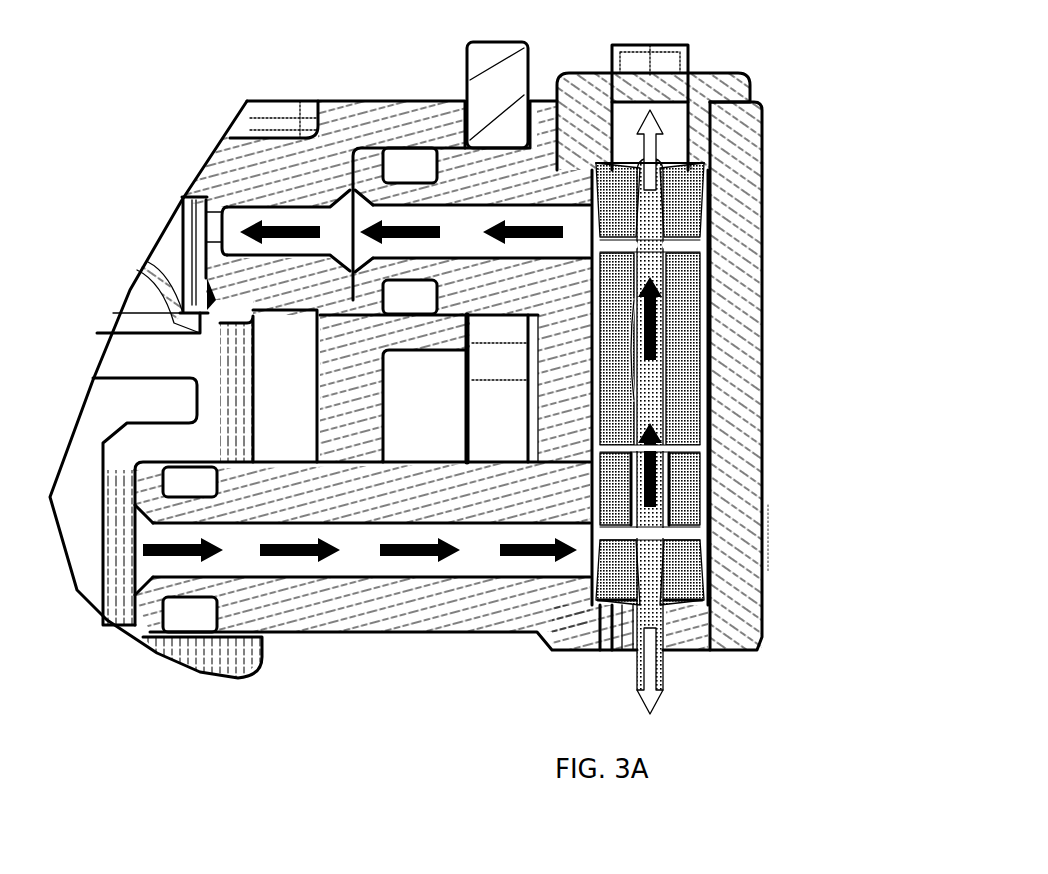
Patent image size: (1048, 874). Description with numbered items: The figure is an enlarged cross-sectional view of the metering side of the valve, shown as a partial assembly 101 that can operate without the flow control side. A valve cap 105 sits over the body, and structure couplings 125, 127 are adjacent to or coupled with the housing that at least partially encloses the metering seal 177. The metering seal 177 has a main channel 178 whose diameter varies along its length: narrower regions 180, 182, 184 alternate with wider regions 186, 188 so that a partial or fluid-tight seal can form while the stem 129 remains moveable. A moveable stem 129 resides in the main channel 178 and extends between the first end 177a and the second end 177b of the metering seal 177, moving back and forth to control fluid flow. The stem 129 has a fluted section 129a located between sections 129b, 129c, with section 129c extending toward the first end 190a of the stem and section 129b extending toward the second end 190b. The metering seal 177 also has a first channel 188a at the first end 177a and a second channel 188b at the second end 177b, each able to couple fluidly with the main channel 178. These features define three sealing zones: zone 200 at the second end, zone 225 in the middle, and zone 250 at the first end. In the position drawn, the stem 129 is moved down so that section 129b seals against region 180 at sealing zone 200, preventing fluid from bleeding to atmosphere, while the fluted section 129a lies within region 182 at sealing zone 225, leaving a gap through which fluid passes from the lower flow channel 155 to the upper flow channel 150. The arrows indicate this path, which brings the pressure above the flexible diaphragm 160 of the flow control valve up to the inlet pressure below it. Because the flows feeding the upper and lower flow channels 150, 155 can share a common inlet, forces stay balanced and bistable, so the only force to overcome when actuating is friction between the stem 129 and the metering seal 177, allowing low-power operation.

The partial assembly 101 is at (940, 134).
The valve cap 105 is at (283, 110).
The structure coupling 125 is at (517, 67).
The structure coupling 127 is at (732, 98).
The stem 129 is at (708, 592).
The fluted section 129a is at (660, 282).
The section 129b is at (707, 193).
The section 129c is at (660, 500).
The upper flow channel 150 is at (460, 222).
The lower flow channel 155 is at (363, 573).
The flexible diaphragm 160 is at (145, 268).
The metering seal 177 is at (697, 193).
The first end of metering seal 177a is at (688, 618).
The second end of metering seal 177b is at (617, 170).
The main channel 178 is at (677, 425).
The narrower region 180 is at (677, 190).
The narrower region 182 is at (630, 393).
The narrower region 184 is at (613, 603).
The wider region 186 is at (613, 313).
The wider region 188 is at (613, 447).
The first channel 188a is at (690, 537).
The second channel 188b is at (687, 248).
The first end of stem 190a is at (680, 680).
The second end of stem 190b is at (724, 118).
The sealing zone 200 is at (835, 234).
The sealing zone 225 is at (818, 383).
The sealing zone 250 is at (828, 541).